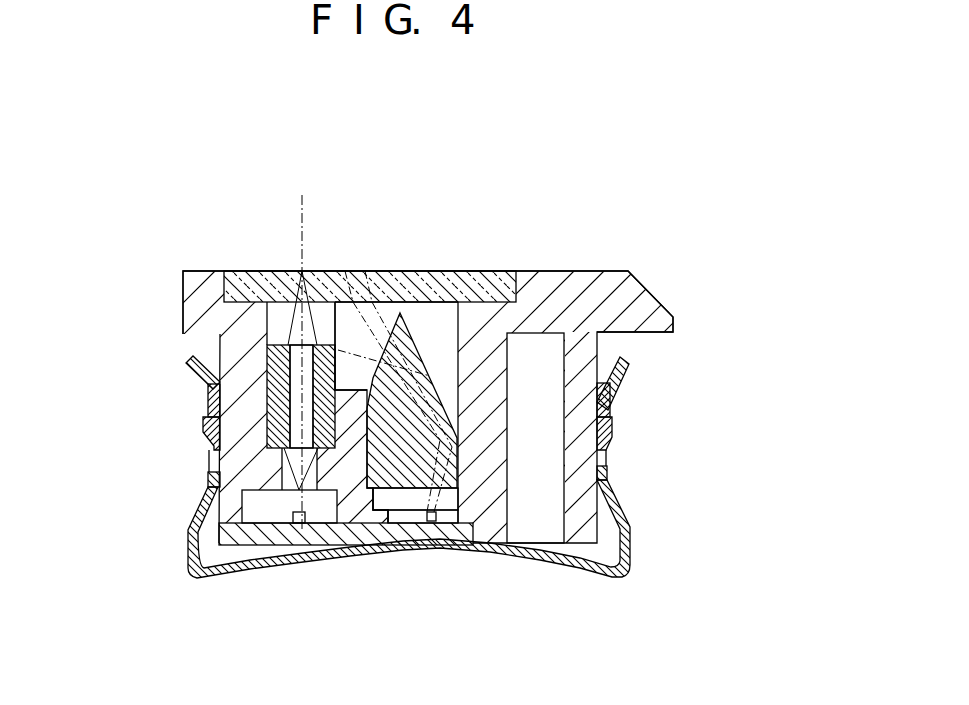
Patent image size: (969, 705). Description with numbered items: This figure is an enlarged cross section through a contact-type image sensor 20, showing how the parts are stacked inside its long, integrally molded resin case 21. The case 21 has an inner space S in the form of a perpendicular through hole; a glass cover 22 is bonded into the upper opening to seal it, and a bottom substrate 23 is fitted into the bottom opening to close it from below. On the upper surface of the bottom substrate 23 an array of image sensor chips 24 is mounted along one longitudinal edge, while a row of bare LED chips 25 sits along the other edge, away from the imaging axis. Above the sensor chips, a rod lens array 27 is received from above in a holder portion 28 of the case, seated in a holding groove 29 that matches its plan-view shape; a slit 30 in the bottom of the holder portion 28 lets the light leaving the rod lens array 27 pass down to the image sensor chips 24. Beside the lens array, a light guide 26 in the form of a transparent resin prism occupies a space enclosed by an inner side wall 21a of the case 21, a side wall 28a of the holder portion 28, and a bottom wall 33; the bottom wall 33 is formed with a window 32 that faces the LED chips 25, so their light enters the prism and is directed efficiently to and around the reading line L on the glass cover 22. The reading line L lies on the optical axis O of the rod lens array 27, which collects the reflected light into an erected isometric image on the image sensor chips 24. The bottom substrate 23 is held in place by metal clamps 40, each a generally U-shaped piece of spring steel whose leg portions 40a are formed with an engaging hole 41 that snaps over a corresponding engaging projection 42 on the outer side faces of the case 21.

The contact-type image sensor 20 is at (580, 240).
The case 21 is at (184, 312).
The inner side wall 21a is at (458, 333).
The glass cover 22 is at (474, 270).
The bottom substrate 23 is at (420, 520).
The image sensor chips 24 is at (293, 496).
The LED chips 25 is at (440, 523).
The light guide 26 is at (388, 331).
The rod lens array 27 is at (267, 366).
The holder portion 28 is at (207, 488).
The side wall 28a is at (373, 380).
The holding groove 29 is at (300, 524).
The slit 30 is at (250, 528).
The window 32 is at (402, 500).
The bottom wall 33 is at (376, 526).
The metal clamps 40 is at (631, 549).
The leg portions 40a is at (207, 393).
The engaging hole 41 is at (207, 466).
The engaging projection 42 is at (203, 427).
The optical axis O is at (301, 187).
The reading line L is at (301, 271).
The inner space S is at (449, 358).